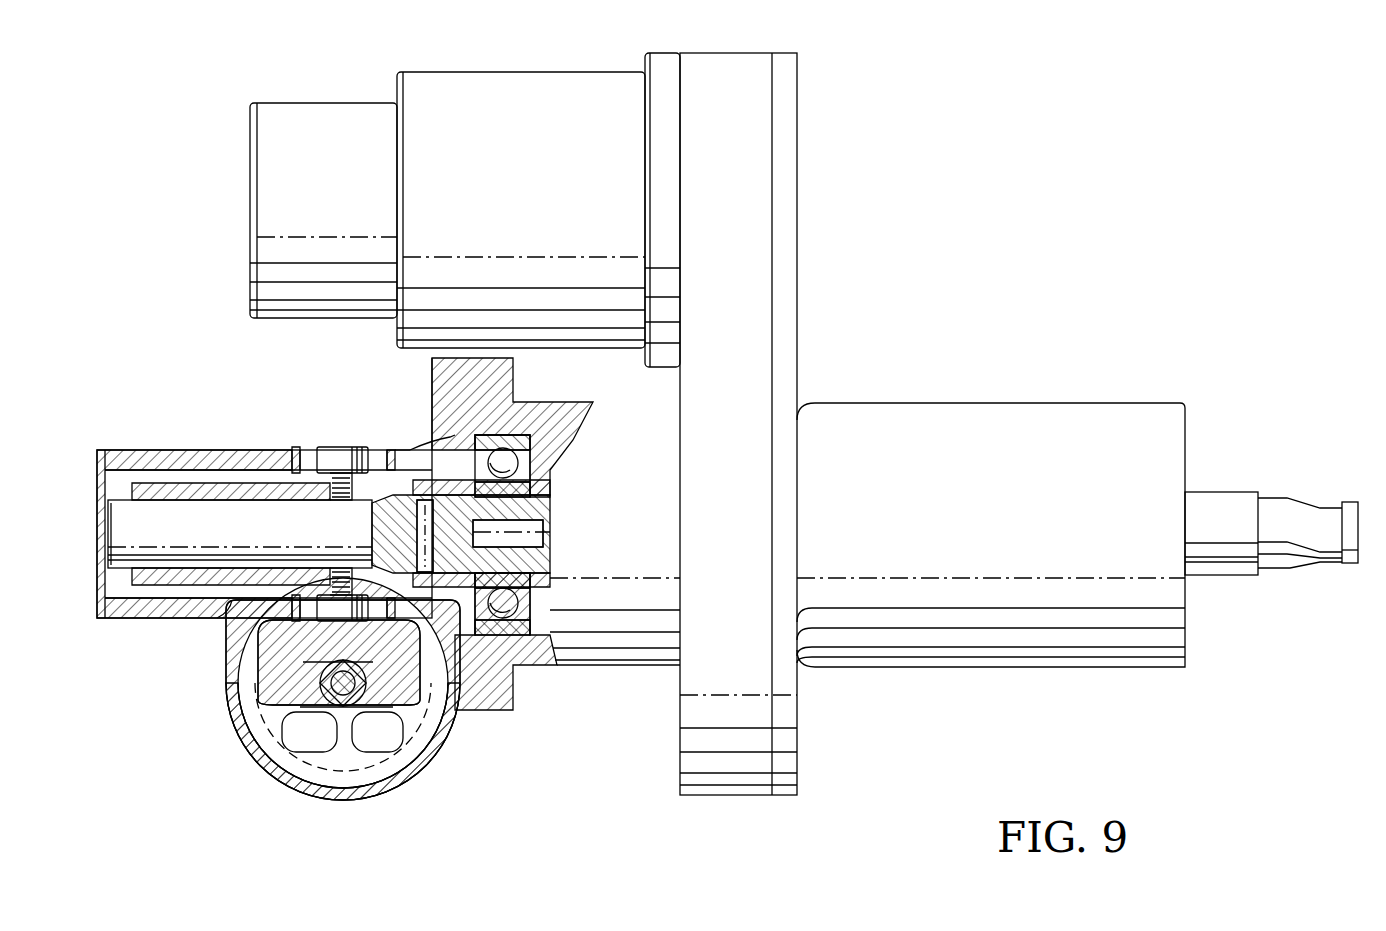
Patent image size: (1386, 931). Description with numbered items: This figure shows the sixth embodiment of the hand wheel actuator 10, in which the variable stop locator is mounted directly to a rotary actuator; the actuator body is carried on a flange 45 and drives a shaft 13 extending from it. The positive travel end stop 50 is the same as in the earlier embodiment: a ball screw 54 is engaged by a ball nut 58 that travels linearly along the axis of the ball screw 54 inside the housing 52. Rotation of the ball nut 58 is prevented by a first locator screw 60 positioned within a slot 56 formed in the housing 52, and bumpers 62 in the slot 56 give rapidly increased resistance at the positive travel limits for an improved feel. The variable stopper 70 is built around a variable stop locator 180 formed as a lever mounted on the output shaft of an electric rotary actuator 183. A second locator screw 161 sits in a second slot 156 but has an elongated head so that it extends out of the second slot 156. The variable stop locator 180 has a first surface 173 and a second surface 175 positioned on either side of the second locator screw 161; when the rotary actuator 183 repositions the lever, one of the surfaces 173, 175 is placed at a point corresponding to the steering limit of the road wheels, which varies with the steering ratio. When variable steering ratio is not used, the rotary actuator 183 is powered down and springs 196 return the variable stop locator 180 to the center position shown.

The hand wheel actuator 10 is at (963, 300).
The steering shaft 13 is at (1215, 502).
The mounting flange 45 is at (800, 237).
The positive travel end stop 50 is at (240, 447).
The housing 52 is at (117, 455).
The ball screw 54 is at (160, 520).
The slot 56 is at (380, 455).
The ball nut 58 is at (190, 487).
The locator screw 60 is at (333, 458).
The bumper 62 is at (297, 452).
The variable stopper 70 is at (251, 705).
The second slot 156 is at (217, 618).
The second locator screw 161 is at (235, 730).
The first surface 173 is at (330, 630).
The second surface 175 is at (390, 618).
The variable stop locator 180 is at (250, 747).
The electric rotary actuator 183 is at (257, 770).
The spring 196 is at (355, 752).